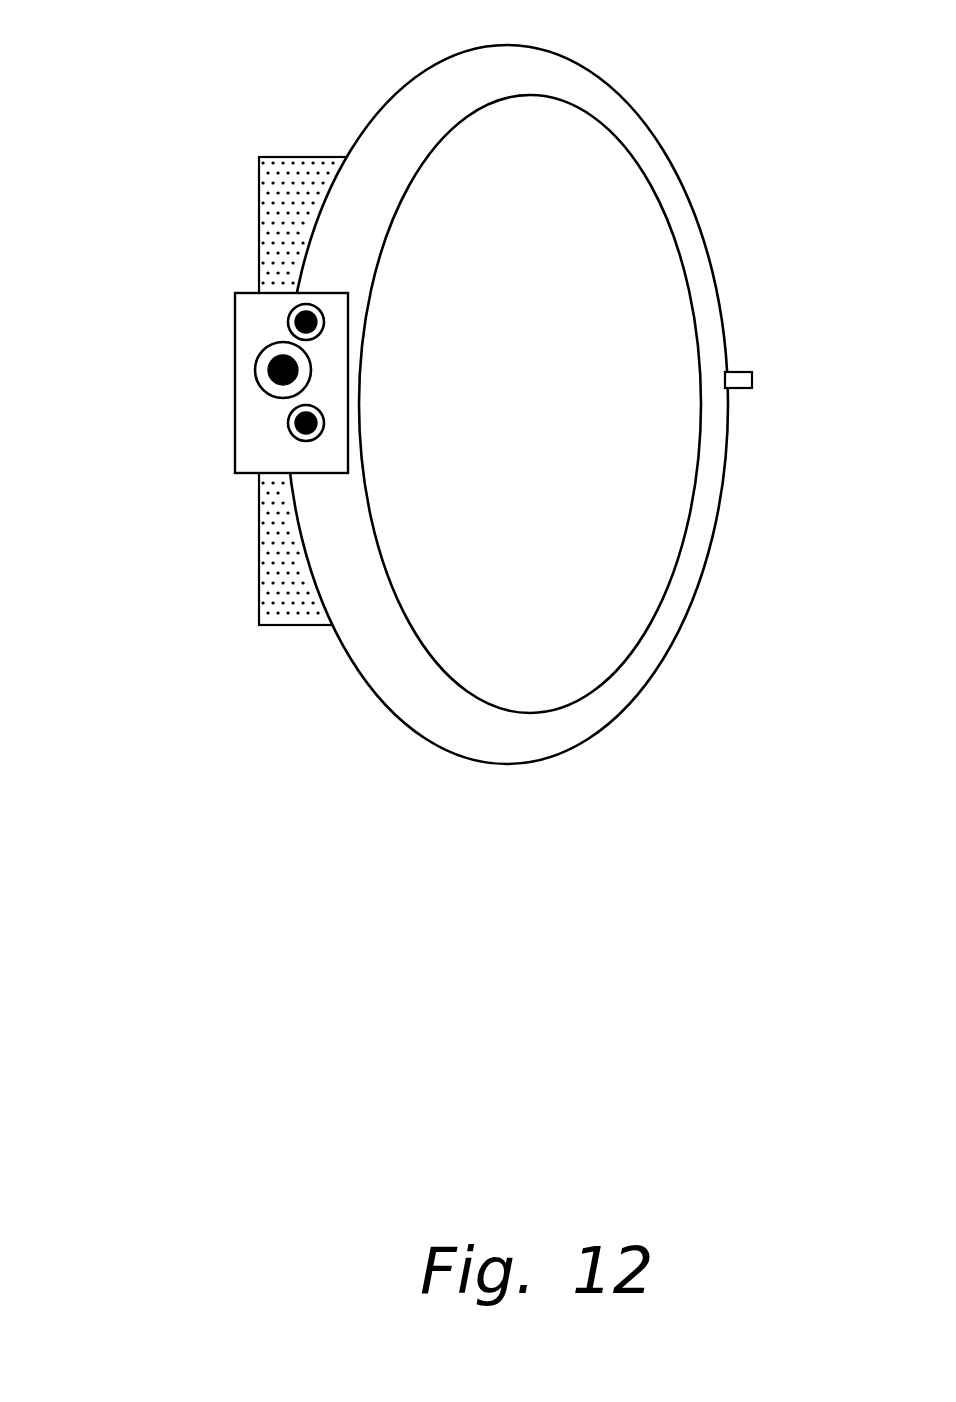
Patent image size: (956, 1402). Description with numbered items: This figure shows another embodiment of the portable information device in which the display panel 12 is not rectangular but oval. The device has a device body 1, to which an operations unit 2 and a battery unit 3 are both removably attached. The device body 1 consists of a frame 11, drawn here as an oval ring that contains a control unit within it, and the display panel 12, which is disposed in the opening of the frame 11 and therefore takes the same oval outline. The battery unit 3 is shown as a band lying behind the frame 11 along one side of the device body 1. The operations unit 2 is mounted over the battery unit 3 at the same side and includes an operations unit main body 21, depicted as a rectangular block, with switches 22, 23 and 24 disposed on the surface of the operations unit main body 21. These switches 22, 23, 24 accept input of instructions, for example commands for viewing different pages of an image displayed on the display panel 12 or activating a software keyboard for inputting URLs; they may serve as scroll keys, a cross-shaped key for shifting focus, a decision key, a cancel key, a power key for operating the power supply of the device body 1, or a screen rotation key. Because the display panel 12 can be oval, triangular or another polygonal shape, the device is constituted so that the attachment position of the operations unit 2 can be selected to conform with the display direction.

The device body 1 is at (547, 440).
The frame 11 is at (620, 687).
The display panel 12 is at (635, 580).
The operations unit 2 is at (202, 367).
The operations unit main body 21 is at (252, 330).
The switch 22 is at (288, 320).
The switch 23 is at (258, 382).
The switch 24 is at (299, 440).
The battery unit 3 is at (290, 630).